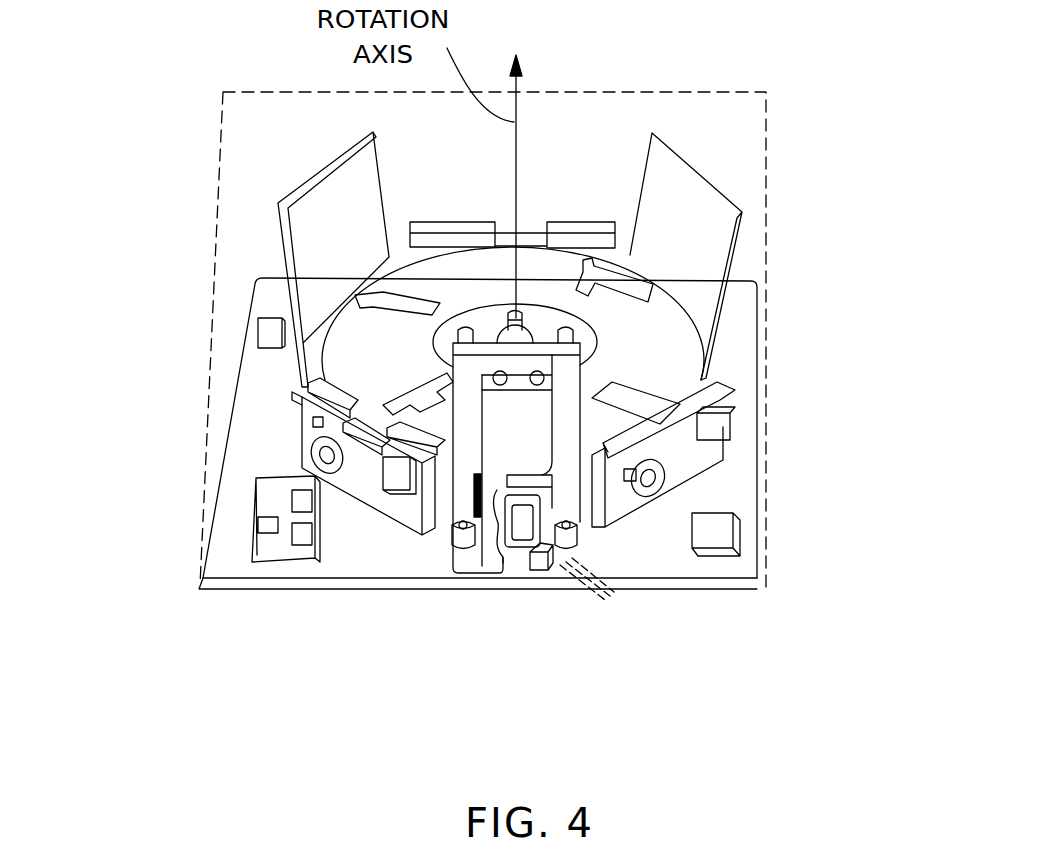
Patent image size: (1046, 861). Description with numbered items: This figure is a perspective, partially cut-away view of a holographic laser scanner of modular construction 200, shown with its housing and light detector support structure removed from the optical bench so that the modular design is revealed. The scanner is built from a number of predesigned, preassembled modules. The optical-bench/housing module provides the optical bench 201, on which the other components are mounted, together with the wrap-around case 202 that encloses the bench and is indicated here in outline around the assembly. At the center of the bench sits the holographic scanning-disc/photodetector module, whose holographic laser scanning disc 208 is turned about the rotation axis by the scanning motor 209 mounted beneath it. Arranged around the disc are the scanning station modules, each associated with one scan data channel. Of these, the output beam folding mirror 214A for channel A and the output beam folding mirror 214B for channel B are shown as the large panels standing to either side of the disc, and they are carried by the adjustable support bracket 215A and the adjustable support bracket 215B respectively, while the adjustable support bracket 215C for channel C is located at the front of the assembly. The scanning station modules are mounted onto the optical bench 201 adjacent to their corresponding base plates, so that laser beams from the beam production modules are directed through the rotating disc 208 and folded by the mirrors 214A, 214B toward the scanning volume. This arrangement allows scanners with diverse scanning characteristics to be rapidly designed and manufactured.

The holographic laser scanner of modular construction 200 is at (168, 551).
The optical bench 201 is at (736, 498).
The wrap-around case 202 is at (207, 407).
The holographic laser scanning disc 208 is at (533, 273).
The scanning motor 209 is at (582, 372).
The output beam folding mirror 214A is at (693, 173).
The output beam folding mirror 214B is at (312, 227).
The adjustable support bracket 215A is at (737, 302).
The adjustable support bracket 215B is at (284, 258).
The adjustable support bracket 215C is at (465, 490).